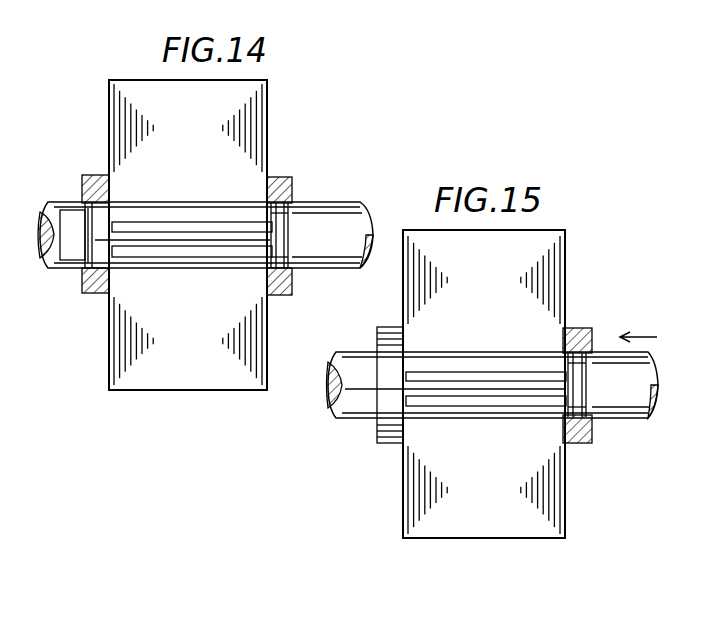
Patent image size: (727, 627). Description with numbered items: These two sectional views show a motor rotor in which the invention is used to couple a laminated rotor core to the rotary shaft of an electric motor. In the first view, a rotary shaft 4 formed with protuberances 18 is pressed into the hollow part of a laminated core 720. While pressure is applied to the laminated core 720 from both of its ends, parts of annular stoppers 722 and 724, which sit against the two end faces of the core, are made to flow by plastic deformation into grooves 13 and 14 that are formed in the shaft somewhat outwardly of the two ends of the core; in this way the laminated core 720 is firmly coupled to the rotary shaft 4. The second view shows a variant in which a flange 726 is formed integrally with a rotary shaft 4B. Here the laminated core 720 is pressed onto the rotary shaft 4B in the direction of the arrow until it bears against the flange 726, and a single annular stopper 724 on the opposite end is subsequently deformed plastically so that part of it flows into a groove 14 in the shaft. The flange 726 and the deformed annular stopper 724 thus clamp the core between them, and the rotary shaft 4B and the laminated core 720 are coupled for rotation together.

In FIG. 14, the rotary shaft 4 is at (343, 216).
In FIG. 15, the rotary shaft 4B is at (632, 408).
In FIG. 14, the groove 13 is at (84, 262).
In FIG. 14, the groove 14 is at (277, 250).
In FIG. 15, the groove 14 is at (590, 410).
In FIG. 14, the protuberances 18 is at (130, 246).
In FIG. 15, the protuberances 18 is at (418, 396).
In FIG. 14, the laminated core 720 is at (255, 90).
In FIG. 15, the laminated core 720 is at (548, 243).
In FIG. 14, the annular stopper 722 is at (90, 177).
In FIG. 14, the annular stopper 724 is at (292, 186).
In FIG. 15, the annular stopper 724 is at (580, 326).
In FIG. 15, the flange 726 is at (388, 342).